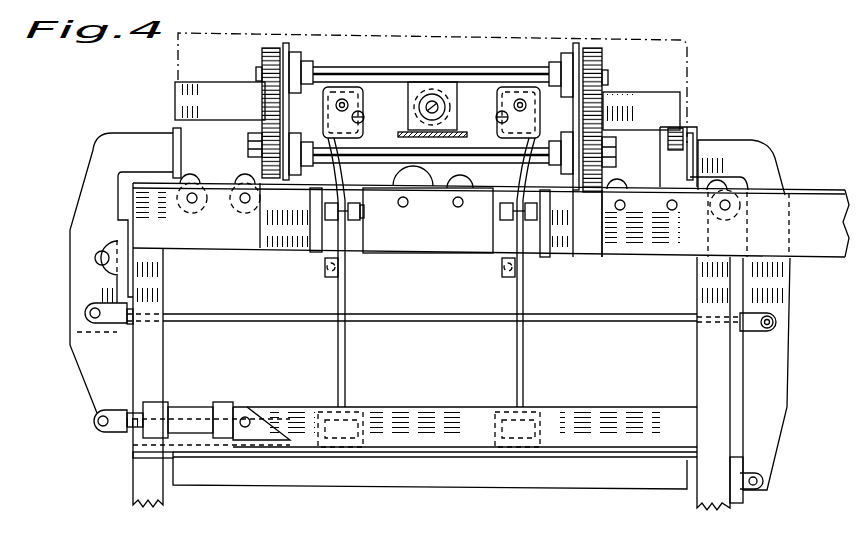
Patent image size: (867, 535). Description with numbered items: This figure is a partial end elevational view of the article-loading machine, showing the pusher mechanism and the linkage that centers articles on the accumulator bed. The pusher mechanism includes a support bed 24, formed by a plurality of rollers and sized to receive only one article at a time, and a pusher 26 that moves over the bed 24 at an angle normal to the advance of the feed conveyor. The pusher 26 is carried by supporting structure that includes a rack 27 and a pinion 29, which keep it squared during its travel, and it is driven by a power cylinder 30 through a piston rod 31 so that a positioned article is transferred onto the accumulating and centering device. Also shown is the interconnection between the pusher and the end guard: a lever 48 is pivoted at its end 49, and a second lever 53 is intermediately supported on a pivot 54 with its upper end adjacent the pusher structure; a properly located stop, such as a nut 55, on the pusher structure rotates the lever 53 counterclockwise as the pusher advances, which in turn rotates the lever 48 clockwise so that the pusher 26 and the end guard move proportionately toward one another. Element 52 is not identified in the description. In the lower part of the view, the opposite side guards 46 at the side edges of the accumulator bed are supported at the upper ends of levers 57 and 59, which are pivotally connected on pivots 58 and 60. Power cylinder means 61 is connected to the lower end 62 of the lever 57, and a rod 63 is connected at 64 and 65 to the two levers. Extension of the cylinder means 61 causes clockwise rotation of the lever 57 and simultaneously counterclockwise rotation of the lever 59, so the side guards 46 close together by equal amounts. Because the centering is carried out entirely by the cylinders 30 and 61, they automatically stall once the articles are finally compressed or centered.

The support bed 24 is at (427, 188).
The pusher 26 is at (222, 84).
The rack 27 is at (268, 100).
The pinion 29 is at (268, 192).
The power cylinder 30 is at (433, 82).
The piston rod 31 is at (427, 88).
The side guards 46 is at (183, 128).
The lever 48 is at (338, 348).
The end 49 is at (497, 430).
The left bolt 52 is at (325, 268).
The lever 53 is at (517, 240).
The pivot 54 is at (363, 213).
The nut 55 is at (520, 93).
The lever 57 is at (89, 177).
The pivot 58 is at (92, 258).
The lever 59 is at (766, 156).
The pivot 60 is at (769, 480).
The power cylinder means 61 is at (200, 412).
The lower end 62 is at (105, 433).
The rod 63 is at (427, 314).
The connection 64 is at (85, 312).
The connection 65 is at (778, 324).